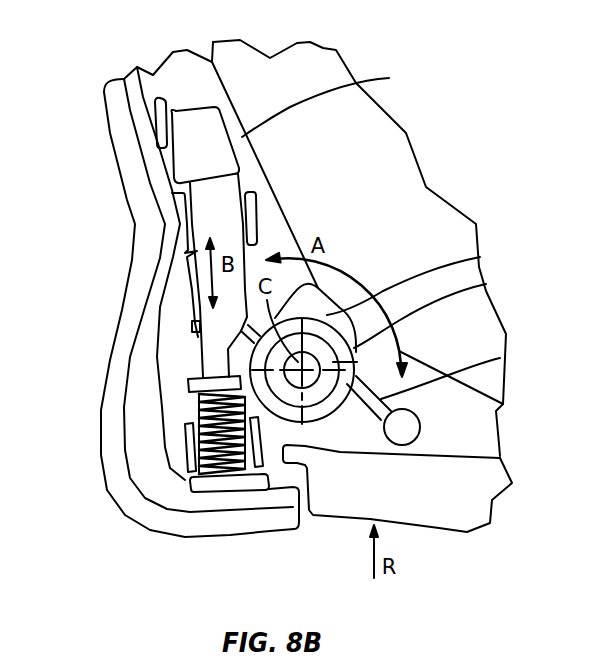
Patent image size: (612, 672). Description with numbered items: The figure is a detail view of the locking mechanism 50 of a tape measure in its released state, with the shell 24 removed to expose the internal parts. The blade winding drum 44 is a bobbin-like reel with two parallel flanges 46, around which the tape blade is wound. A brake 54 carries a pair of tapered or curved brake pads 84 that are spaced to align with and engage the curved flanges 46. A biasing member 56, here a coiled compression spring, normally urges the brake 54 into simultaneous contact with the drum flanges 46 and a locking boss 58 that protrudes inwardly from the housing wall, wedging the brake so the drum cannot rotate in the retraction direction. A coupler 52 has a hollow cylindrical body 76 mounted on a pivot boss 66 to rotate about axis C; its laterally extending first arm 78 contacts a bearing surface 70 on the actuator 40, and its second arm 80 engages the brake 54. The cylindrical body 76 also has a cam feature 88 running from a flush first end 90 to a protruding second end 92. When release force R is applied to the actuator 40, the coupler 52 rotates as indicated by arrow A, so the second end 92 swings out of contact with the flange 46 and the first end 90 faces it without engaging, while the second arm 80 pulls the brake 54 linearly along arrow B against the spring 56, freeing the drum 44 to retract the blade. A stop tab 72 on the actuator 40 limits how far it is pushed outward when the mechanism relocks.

The shell 24 is at (123, 307).
The actuator 40 is at (443, 515).
The blade winding drum 44 is at (310, 42).
The drum flanges 46 is at (212, 62).
The locking mechanism 50 is at (187, 448).
The coupler 52 is at (275, 420).
The brake 54 is at (215, 220).
The biasing member 56 is at (197, 405).
The locking boss 58 is at (160, 113).
The pivot boss 66 is at (357, 362).
The bearing surface 70 is at (461, 449).
The stop tab 72 is at (293, 462).
The cylindrical body 76 is at (317, 415).
The first arm 78 is at (500, 358).
The second arm 80 is at (195, 330).
The brake pads 84 is at (389, 78).
The cam feature 88 is at (480, 257).
The first end 90 is at (486, 284).
The second end 92 is at (326, 278).